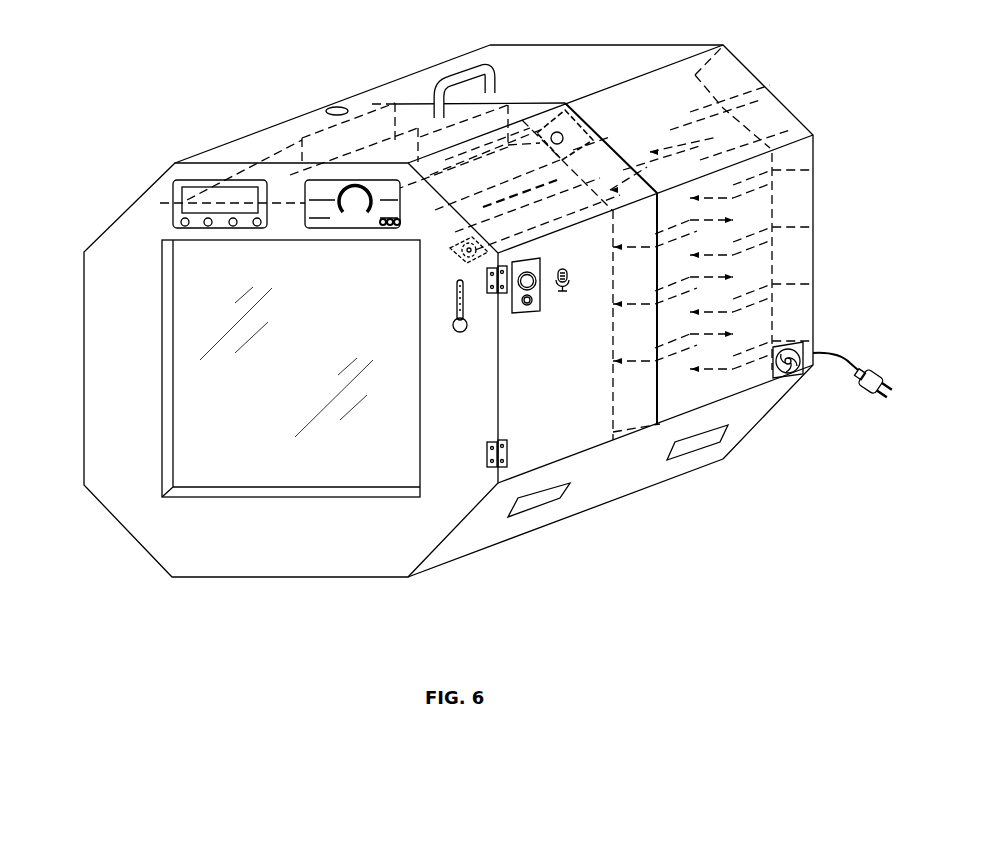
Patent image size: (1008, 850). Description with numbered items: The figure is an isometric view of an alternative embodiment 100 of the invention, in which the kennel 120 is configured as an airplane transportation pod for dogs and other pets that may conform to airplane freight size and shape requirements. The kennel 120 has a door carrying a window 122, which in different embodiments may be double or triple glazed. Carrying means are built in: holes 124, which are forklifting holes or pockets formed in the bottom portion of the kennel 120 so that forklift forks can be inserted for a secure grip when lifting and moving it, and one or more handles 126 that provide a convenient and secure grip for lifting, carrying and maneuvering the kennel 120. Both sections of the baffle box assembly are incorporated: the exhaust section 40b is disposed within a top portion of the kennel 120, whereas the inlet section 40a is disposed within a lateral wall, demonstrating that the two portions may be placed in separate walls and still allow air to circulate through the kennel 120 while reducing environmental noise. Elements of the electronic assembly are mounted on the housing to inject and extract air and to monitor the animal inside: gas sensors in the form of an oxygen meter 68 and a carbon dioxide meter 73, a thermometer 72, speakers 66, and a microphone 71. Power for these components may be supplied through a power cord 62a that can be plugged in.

The alternative embodiment 100 is at (105, 142).
The kennel 120 is at (82, 365).
The window 122 is at (257, 468).
The holes 124 is at (693, 452).
The handles 126 is at (462, 72).
The inlet section 40a is at (730, 80).
The exhaust section 40b is at (270, 135).
The carbon dioxide meter 73 is at (178, 203).
The oxygen meter 68 is at (354, 231).
The thermometer 72 is at (461, 332).
The speakers 66 is at (527, 310).
The microphone 71 is at (563, 291).
The power cord 62a is at (847, 356).